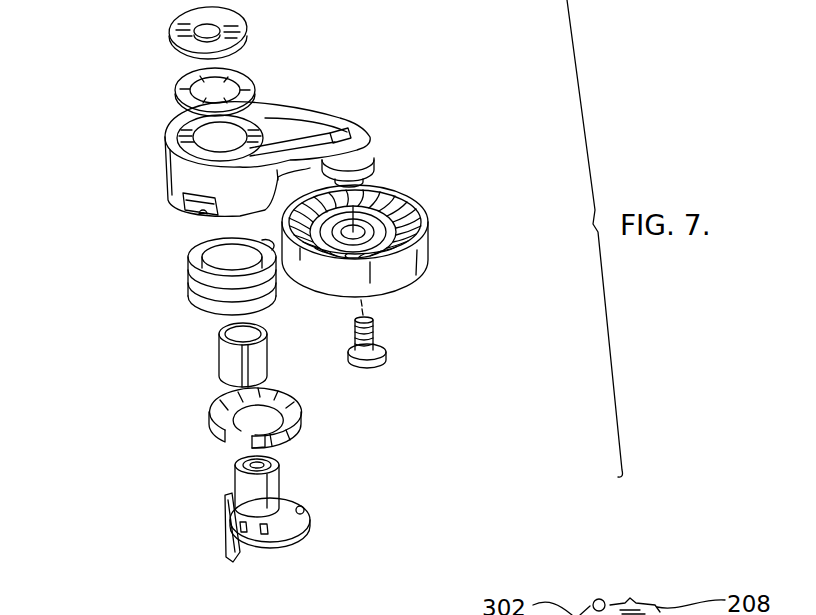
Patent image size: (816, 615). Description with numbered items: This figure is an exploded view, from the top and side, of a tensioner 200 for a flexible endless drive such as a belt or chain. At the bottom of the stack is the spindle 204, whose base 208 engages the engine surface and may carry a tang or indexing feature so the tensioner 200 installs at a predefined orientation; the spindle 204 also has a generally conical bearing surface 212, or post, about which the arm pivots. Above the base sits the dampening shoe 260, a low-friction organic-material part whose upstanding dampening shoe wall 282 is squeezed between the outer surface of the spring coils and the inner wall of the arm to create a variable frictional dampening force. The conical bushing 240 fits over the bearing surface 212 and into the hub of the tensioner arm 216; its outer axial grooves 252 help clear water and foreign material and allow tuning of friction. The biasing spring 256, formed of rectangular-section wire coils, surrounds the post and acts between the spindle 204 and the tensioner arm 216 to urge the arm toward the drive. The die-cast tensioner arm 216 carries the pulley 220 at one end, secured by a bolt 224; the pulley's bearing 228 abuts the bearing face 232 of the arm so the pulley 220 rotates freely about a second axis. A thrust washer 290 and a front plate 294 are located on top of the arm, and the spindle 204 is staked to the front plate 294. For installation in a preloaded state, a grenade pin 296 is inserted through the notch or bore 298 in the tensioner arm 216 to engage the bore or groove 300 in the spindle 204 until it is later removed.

The tensioner 200 is at (145, 105).
The spindle 204 is at (266, 534).
The base 208 is at (312, 555).
The bearing surface 212 is at (247, 483).
The tensioner arm 216 is at (225, 188).
The pulley 220 is at (404, 241).
The bolt 224 is at (382, 340).
The bearing 228 is at (377, 235).
The bearing face 232 is at (373, 170).
The conical bushing 240 is at (247, 363).
The outer axial grooves 252 is at (268, 360).
The biasing spring 256 is at (190, 277).
The dampening shoe 260 is at (265, 418).
The dampening shoe wall 282 is at (300, 405).
The thrust washer 290 is at (240, 72).
The front plate 294 is at (247, 20).
The grenade pin 296 is at (228, 548).
The notch or bore 298 is at (195, 215).
The bore or groove 300 is at (255, 543).